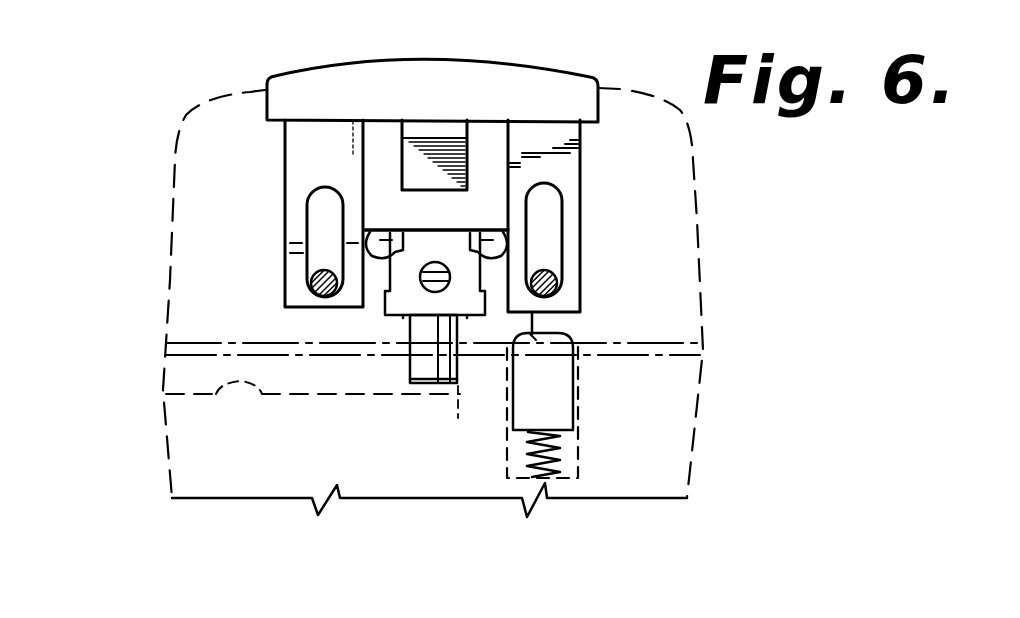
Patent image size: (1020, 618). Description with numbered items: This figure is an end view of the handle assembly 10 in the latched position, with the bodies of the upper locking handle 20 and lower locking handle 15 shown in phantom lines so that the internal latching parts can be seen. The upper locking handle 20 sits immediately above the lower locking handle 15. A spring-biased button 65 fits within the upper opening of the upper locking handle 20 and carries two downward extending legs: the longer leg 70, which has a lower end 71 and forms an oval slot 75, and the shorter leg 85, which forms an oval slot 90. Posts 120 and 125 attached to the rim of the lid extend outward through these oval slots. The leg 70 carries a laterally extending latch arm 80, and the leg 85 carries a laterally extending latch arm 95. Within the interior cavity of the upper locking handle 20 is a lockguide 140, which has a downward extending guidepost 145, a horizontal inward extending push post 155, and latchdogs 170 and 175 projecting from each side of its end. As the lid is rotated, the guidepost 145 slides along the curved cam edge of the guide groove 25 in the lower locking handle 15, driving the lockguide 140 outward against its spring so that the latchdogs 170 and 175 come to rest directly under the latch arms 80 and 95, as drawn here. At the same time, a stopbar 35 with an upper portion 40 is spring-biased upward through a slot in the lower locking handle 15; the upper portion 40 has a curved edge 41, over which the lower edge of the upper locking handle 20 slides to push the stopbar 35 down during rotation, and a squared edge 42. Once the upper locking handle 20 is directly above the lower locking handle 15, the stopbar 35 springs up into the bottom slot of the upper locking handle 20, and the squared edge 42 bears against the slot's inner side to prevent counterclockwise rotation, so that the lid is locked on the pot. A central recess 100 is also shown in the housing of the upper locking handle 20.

The mounting assembly 10 is at (97, 182).
The lower locking handle 15 is at (703, 381).
The upper locking handle 20 is at (699, 214).
The guide groove 25 is at (258, 405).
The stopbar 35 is at (576, 377).
The upper portion 40 is at (562, 330).
The curved edge or corner 41 is at (530, 341).
The squared edge or corner 42 is at (568, 334).
The spring-biased button 65 is at (416, 58).
The downward extending leg 70 is at (580, 184).
The lower end 71 is at (536, 336).
The oval slot 75 is at (553, 236).
The latch arm 80 is at (492, 232).
The downward extending leg 85 is at (285, 190).
The oval slot 90 is at (308, 216).
The latch arm 95 is at (371, 236).
The central recess 100 is at (400, 140).
The post 120 is at (548, 281).
The post 125 is at (312, 273).
The lockguide 140 is at (388, 300).
The downward extending guidepost 145 is at (409, 368).
The push post 155 is at (424, 284).
The latchdog 170 is at (465, 245).
The latchdog 175 is at (404, 245).